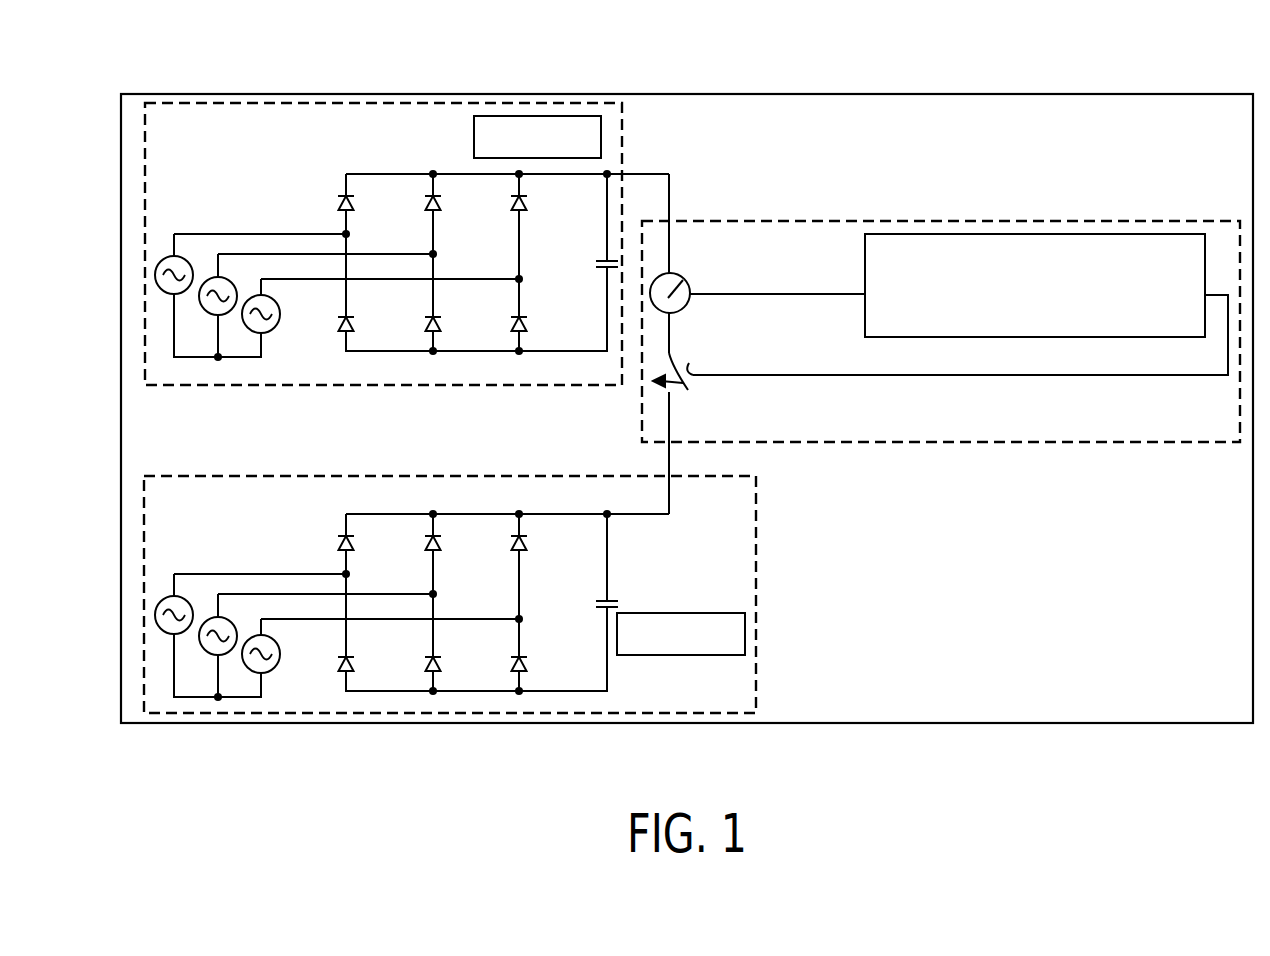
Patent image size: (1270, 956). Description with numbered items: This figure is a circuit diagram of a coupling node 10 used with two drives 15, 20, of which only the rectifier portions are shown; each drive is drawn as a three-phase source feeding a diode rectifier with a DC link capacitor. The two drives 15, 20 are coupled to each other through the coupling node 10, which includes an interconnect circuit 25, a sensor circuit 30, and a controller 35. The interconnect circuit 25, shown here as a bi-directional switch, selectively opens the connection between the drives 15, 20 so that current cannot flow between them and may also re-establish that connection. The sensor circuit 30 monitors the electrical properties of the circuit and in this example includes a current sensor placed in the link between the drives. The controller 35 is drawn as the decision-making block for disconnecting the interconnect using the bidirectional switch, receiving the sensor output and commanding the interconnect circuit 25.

The coupling node 10 is at (935, 94).
The drive 15 is at (328, 385).
The drive 20 is at (448, 475).
The interconnect circuit 25 is at (686, 388).
The sensor circuit 30 is at (677, 272).
The controller 35 is at (985, 337).